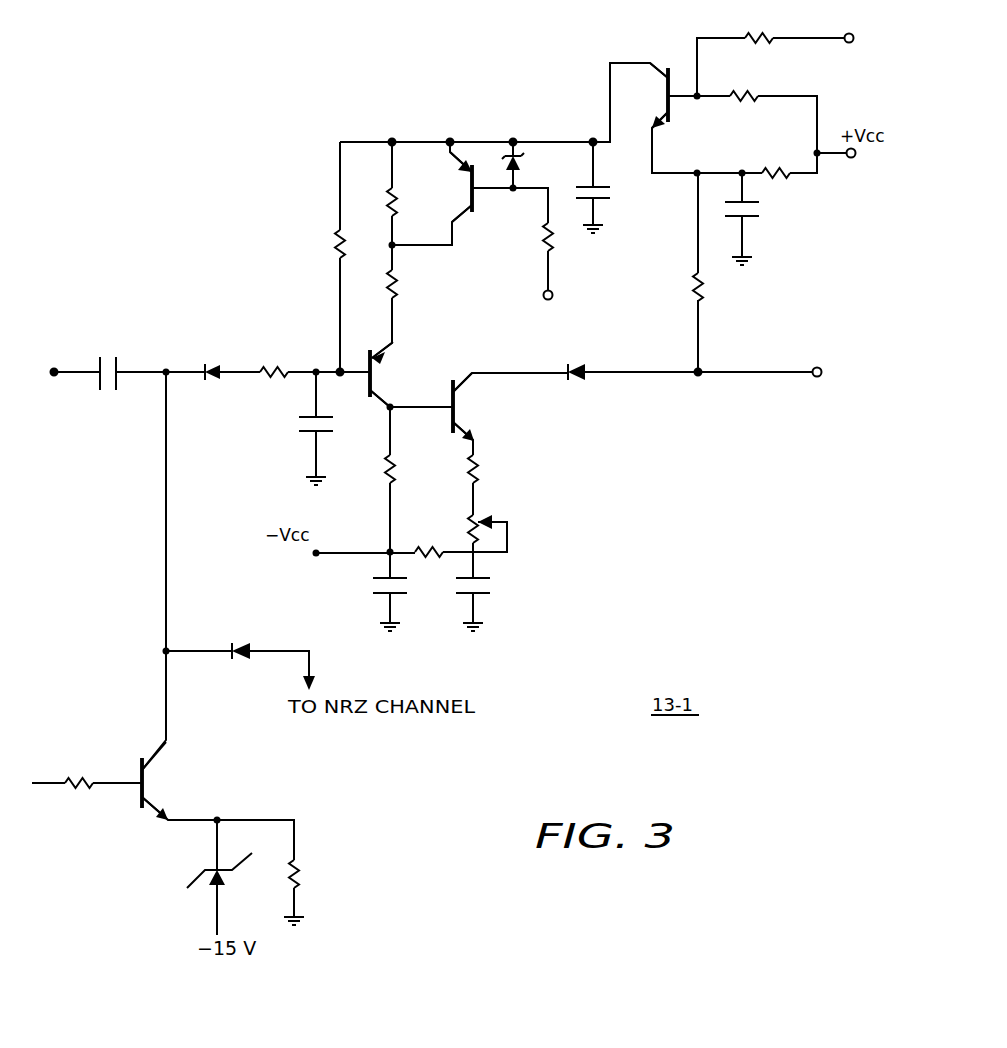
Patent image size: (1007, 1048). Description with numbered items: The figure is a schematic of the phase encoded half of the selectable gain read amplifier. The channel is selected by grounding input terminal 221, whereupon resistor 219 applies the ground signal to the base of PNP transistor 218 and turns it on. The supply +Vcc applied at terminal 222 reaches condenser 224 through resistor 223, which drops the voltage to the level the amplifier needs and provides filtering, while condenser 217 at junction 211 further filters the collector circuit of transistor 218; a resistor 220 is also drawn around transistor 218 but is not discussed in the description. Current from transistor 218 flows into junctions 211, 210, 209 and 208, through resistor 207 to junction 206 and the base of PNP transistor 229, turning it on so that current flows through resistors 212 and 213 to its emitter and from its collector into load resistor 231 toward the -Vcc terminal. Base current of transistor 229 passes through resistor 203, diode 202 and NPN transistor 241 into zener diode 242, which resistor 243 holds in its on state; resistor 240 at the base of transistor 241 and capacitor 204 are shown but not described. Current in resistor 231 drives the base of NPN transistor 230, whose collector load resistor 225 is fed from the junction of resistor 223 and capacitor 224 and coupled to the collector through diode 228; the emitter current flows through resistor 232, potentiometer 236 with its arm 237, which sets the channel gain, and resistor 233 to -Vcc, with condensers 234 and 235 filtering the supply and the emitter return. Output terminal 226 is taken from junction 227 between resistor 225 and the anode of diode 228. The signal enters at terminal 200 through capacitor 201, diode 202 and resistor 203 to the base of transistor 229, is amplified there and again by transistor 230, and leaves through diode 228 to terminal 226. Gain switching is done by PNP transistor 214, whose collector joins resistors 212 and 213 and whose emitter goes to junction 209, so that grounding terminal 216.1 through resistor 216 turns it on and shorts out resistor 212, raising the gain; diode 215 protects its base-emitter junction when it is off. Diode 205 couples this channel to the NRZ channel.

The input terminal 200 is at (54, 370).
The capacitor 201 is at (100, 360).
The diode 202 is at (206, 362).
The resistor 203 is at (262, 368).
The capacitor 204 is at (304, 432).
The diode 205 is at (228, 645).
The junction 206 is at (340, 368).
The resistor 207 is at (338, 238).
The junction 208 is at (392, 140).
The junction 209 is at (450, 140).
The junction 210 is at (511, 141).
The junction 211 is at (593, 140).
The resistor 212 is at (397, 198).
The resistor 213 is at (396, 283).
The PNP transistor 214 is at (479, 203).
The diode 215 is at (518, 152).
The resistor 216 is at (552, 240).
The terminal 216.1 is at (552, 300).
The condenser 217 is at (606, 198).
The PNP transistor 218 is at (670, 75).
The resistor 219 is at (755, 34).
The resistor 220 is at (738, 100).
The input terminal 221 is at (850, 33).
The terminal 222 is at (852, 158).
The resistor 223 is at (777, 180).
The condenser 224 is at (756, 218).
The resistor 225 is at (703, 294).
The output terminal 226 is at (822, 370).
The junction 227 is at (698, 376).
The diode 228 is at (583, 378).
The PNP transistor 229 is at (375, 372).
The NPN transistor 230 is at (458, 412).
The load resistor 231 is at (396, 470).
The resistor 232 is at (482, 470).
The resistor 233 is at (426, 550).
The condenser 234 is at (377, 594).
The condenser 235 is at (489, 595).
The potentiometer 236 is at (482, 530).
The potentiometer arm 237 is at (510, 523).
The resistor 240 is at (86, 781).
The NPN transistor 241 is at (148, 772).
The zener diode 242 is at (210, 866).
The resistor 243 is at (300, 862).